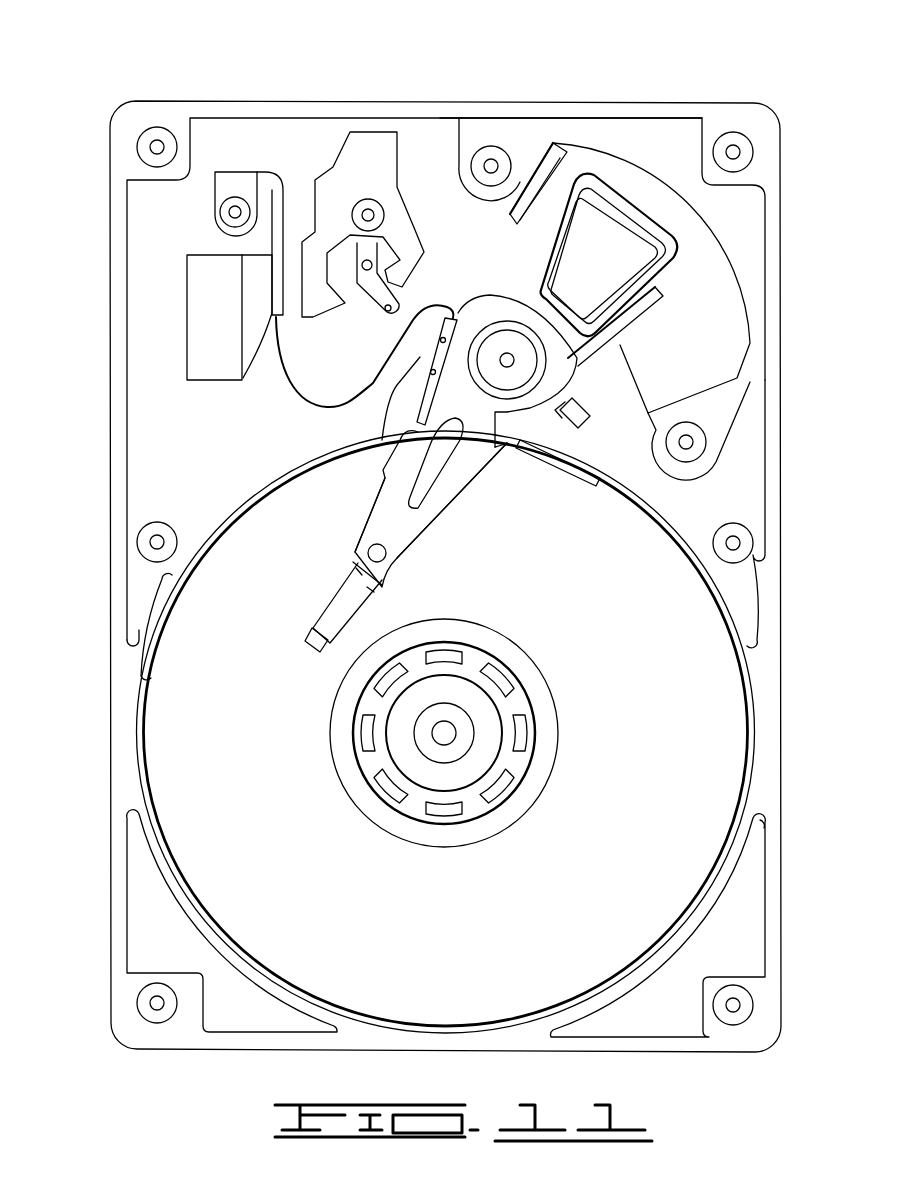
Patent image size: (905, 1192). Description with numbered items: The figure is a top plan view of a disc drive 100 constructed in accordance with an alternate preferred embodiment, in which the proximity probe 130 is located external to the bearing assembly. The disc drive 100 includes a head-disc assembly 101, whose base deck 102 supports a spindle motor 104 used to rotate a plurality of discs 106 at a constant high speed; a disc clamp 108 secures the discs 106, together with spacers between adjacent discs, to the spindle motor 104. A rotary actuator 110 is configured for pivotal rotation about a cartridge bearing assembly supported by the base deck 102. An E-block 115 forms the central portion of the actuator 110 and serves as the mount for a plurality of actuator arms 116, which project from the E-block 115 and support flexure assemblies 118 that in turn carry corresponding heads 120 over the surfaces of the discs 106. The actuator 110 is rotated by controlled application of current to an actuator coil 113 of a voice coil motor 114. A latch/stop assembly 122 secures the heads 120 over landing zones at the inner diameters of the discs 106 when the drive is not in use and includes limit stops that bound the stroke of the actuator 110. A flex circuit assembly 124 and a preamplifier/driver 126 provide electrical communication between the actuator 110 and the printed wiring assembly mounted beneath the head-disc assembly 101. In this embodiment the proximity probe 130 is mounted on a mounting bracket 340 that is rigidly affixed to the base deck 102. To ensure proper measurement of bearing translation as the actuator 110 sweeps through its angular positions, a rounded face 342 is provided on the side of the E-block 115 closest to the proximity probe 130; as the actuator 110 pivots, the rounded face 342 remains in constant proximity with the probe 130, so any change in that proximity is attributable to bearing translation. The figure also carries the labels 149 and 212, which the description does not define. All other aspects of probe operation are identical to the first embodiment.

The disc drive 100 is at (212, 78).
The head-disc assembly 101 is at (124, 156).
The base deck 102 is at (205, 447).
The spindle motor 104 is at (454, 765).
The discs 106 is at (683, 825).
The disc clamp 108 is at (346, 776).
The rotary actuator 110 is at (481, 430).
The actuator coil 113 is at (583, 180).
The voice coil motor 114 is at (525, 158).
The E-block 115 is at (463, 405).
The actuator arms 116 is at (387, 530).
The flexure assemblies 118 is at (338, 608).
The heads 120 is at (314, 638).
The latch/stop assembly 122 is at (375, 150).
The flex circuit assembly 124 is at (307, 406).
The preamplifier/driver 126 is at (410, 385).
The proximity probe 130 is at (563, 403).
The bracket 149 is at (494, 182).
The pivot bearing 212 is at (508, 332).
The mounting bracket 340 is at (575, 418).
The rounded face 342 is at (520, 450).